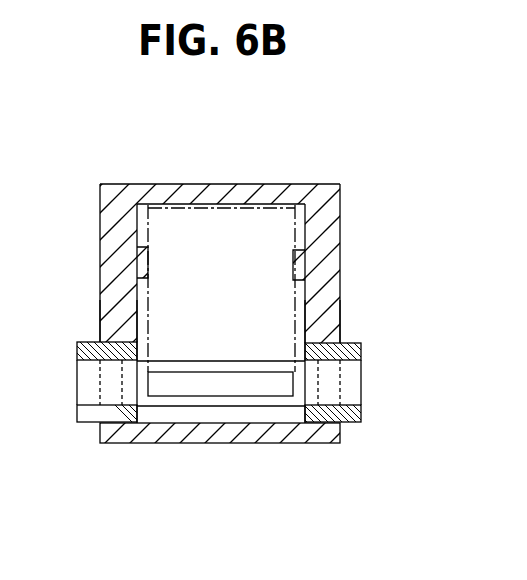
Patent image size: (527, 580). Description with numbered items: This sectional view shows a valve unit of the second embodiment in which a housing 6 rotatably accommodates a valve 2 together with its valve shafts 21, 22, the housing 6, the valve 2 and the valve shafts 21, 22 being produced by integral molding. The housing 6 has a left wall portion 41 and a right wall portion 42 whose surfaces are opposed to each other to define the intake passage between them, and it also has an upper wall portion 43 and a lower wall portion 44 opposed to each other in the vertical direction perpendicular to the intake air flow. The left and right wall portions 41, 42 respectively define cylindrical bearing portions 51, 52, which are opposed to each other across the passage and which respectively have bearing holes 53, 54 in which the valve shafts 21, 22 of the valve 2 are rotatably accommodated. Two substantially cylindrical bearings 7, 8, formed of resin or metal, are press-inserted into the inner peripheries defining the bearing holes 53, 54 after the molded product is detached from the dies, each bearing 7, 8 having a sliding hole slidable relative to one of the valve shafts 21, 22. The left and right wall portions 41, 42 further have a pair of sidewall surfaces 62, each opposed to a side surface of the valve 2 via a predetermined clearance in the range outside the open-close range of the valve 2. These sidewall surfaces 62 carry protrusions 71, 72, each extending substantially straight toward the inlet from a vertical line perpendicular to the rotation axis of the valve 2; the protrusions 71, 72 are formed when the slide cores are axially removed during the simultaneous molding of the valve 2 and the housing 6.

The housing 6 is at (220, 154).
The upper wall portion 43 is at (222, 183).
The left wall portion 41 is at (107, 232).
The right wall portion 42 is at (332, 231).
The bearing portion 51 is at (115, 333).
The bearing portion 52 is at (323, 333).
The protrusion 71 is at (148, 248).
The protrusion 72 is at (295, 252).
The sidewall surface 62 is at (148, 295).
The bearing 7 is at (77, 347).
The bearing 8 is at (358, 350).
The bearing hole 53 is at (107, 405).
The bearing hole 54 is at (333, 405).
The valve shaft 21 is at (83, 378).
The valve shaft 22 is at (355, 385).
The lower wall portion 44 is at (197, 437).
The valve 2 is at (247, 397).